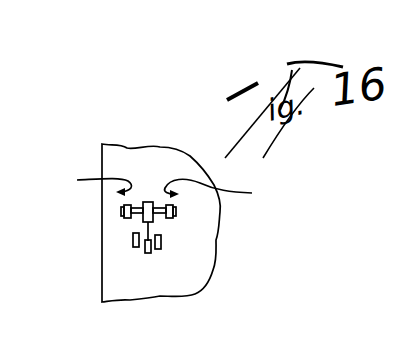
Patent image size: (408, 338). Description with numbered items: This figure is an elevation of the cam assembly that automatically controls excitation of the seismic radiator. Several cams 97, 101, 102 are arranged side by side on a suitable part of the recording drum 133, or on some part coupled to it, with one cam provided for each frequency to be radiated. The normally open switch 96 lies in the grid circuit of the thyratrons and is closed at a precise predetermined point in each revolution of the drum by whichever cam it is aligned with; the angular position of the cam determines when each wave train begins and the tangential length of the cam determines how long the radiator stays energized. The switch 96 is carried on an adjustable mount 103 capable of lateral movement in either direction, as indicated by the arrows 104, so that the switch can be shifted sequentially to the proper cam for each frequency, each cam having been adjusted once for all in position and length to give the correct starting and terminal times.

The switch 96 is at (149, 202).
The cam 97 is at (133, 239).
The cam 101 is at (145, 251).
The cam 102 is at (162, 246).
The adjustable mount 103 is at (178, 213).
The arrows 104 is at (162, 185).
The recording drum 133 is at (176, 282).